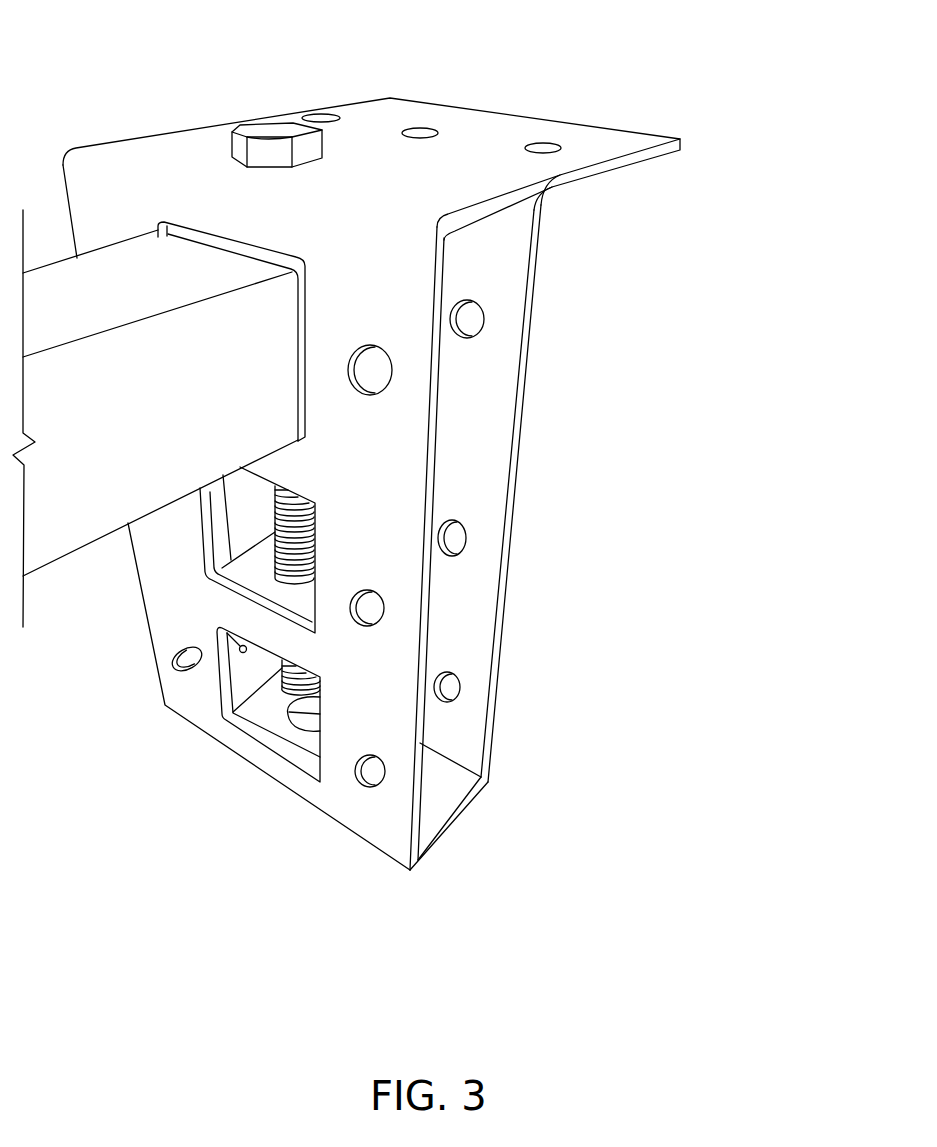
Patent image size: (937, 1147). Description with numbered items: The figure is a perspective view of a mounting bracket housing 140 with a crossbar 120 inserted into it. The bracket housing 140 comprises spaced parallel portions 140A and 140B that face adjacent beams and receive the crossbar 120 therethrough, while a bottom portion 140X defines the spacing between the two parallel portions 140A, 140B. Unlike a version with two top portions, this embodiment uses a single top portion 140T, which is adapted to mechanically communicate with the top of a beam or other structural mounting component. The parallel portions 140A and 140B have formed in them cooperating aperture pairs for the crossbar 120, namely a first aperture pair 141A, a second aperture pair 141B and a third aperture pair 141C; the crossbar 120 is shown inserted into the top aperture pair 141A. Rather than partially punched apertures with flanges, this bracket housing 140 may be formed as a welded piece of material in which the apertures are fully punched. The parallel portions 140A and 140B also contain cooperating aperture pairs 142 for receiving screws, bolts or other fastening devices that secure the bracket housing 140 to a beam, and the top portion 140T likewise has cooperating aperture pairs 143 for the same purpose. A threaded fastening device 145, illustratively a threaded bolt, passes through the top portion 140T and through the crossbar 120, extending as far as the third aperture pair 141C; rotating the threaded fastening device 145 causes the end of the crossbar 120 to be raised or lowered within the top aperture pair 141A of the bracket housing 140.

The crossbar 120 is at (68, 555).
The bracket housing 140 is at (640, 351).
The top portion 140T is at (618, 165).
The spaced parallel portion 140A is at (421, 780).
The spaced parallel portion 140B is at (490, 718).
The bottom portion 140X is at (437, 843).
The first aperture pair 141A is at (305, 305).
The second aperture pair 141B is at (315, 518).
The third aperture pair 141C is at (320, 757).
The cooperating aperture pairs 142 is at (393, 381).
The cooperating aperture pairs 143 is at (527, 147).
The threaded fastening device 145 is at (232, 136).